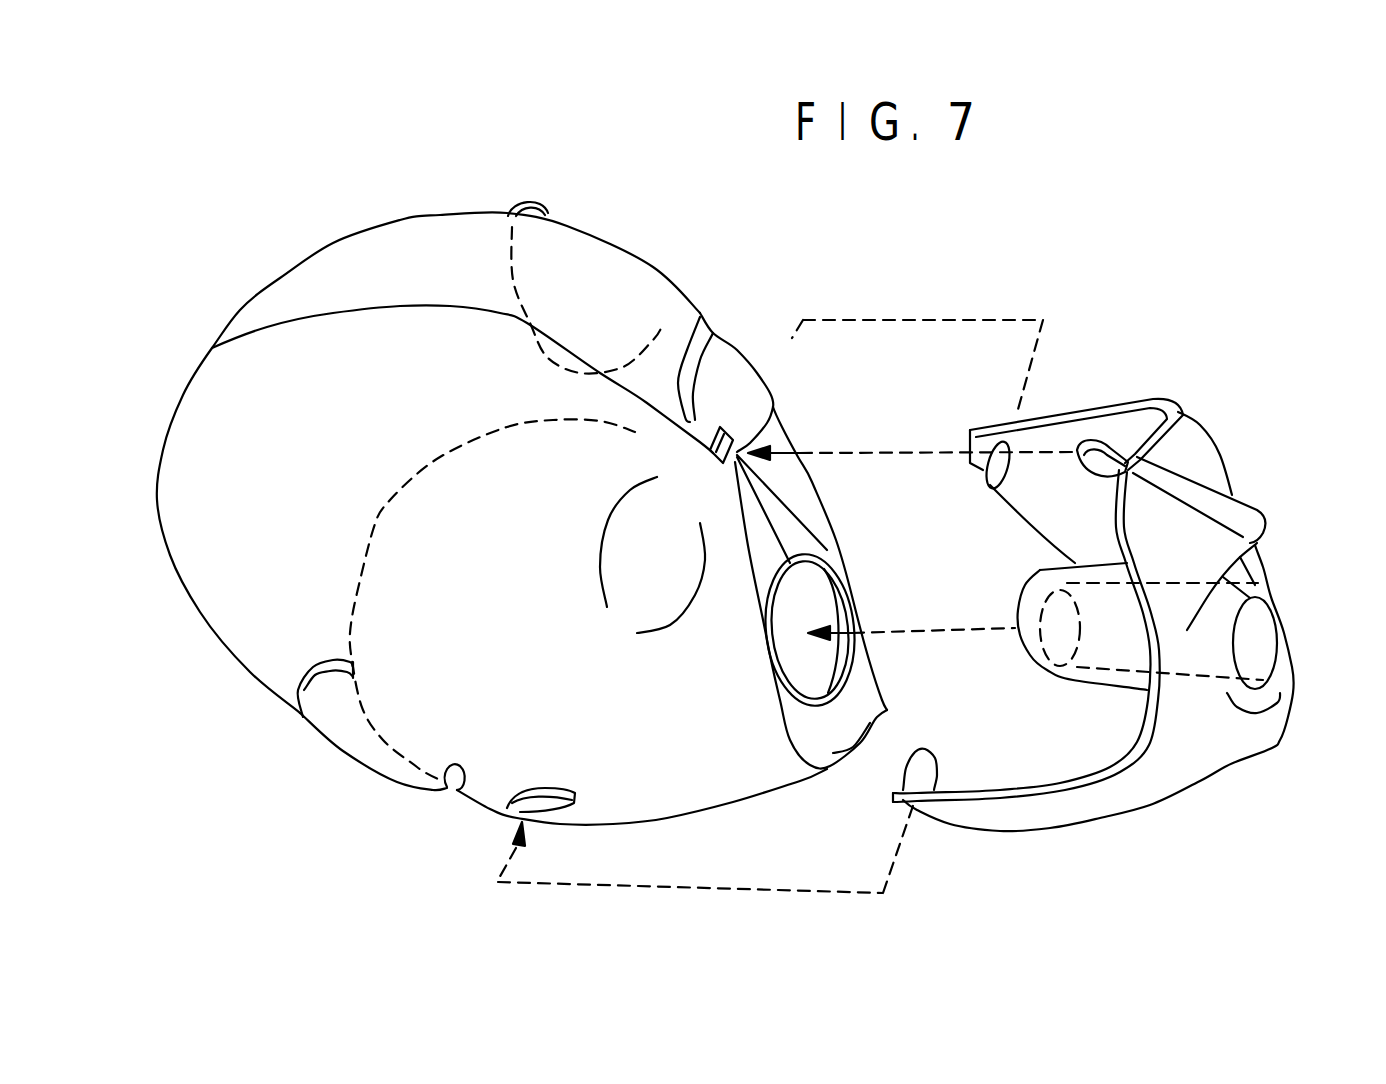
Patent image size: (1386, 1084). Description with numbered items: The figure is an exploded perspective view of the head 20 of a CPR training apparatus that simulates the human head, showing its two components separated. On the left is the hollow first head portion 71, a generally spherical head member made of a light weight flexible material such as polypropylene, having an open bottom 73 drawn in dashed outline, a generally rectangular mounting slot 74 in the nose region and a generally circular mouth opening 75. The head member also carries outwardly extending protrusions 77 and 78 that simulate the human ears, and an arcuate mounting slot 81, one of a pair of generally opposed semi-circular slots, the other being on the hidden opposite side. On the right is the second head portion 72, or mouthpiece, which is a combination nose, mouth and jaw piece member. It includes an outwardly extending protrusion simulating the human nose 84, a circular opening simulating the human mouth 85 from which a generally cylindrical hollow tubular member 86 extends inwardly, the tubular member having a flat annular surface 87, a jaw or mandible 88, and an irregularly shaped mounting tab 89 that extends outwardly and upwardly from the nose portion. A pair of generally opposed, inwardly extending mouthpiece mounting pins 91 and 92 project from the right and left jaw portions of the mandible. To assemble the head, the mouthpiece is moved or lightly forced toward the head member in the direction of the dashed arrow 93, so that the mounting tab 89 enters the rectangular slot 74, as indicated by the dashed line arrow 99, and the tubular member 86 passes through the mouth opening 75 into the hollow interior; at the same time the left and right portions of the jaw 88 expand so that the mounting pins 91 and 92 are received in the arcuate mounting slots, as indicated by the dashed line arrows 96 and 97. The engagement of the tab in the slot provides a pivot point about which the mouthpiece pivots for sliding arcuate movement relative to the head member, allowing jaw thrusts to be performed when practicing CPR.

The head 20 is at (258, 262).
The first head portion 71 is at (590, 220).
The second head portion 72 is at (1210, 422).
The open bottom 73 is at (372, 530).
The mounting slot 74 is at (770, 350).
The mouth opening 75 is at (828, 578).
The protrusion 77 is at (298, 717).
The protrusion 78 is at (530, 196).
The arcuate mounting slot 81 is at (520, 800).
The nose 84 is at (1250, 517).
The mouth 85 is at (1270, 633).
The tubular member 86 is at (1065, 570).
The flat annular surface 87 is at (1020, 598).
The jaw 88 is at (1210, 778).
The mounting tab 89 is at (1094, 442).
The mouthpiece mounting pin 91 is at (993, 478).
The mouthpiece mounting pin 92 is at (935, 754).
The dashed arrow 93 is at (947, 650).
The dashed line arrow 96 is at (648, 893).
The dashed line arrow 97 is at (953, 320).
The dashed line arrow 99 is at (883, 453).